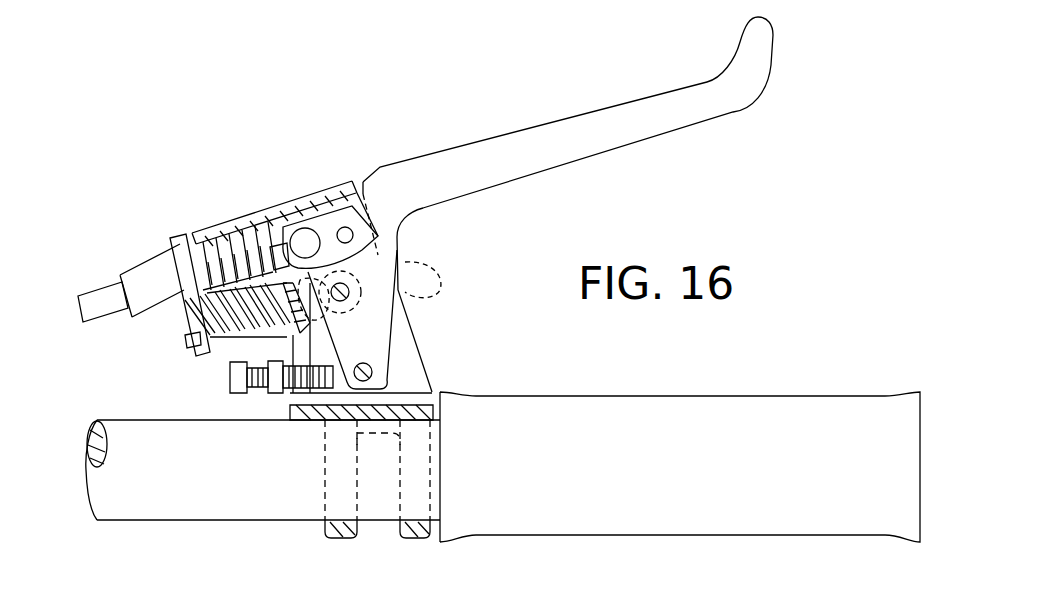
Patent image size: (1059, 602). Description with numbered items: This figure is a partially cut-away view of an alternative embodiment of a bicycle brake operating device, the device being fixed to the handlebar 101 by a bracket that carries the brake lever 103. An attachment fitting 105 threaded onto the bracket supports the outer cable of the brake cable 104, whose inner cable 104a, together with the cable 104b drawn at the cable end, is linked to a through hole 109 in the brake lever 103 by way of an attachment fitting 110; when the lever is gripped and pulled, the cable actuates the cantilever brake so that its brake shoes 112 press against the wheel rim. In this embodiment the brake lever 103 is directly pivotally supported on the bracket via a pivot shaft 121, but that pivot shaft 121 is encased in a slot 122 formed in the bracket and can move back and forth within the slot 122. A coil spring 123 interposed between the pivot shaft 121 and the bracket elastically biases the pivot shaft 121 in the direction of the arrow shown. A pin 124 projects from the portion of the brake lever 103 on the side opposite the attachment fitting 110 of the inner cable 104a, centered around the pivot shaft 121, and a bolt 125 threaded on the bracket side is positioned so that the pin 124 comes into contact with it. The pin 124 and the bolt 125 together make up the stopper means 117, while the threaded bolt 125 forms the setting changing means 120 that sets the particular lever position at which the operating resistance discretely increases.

The handlebar 101 is at (247, 503).
The brake lever 103 is at (547, 101).
The brake cable 104 is at (88, 309).
The inner cable 104a is at (238, 228).
The cable inner wire 104b is at (108, 322).
The attachment fitting 105 is at (165, 270).
The through hole 109 is at (365, 242).
The attachment fitting 110 is at (275, 205).
The brake shoes 112 is at (412, 375).
The stopper means 117 is at (380, 347).
The setting changing means 120 is at (220, 398).
The pivot shaft 121 is at (342, 292).
The slot 122 is at (420, 281).
The coil spring 123 is at (228, 340).
The pin 124 is at (363, 380).
The bolt 125 is at (287, 417).